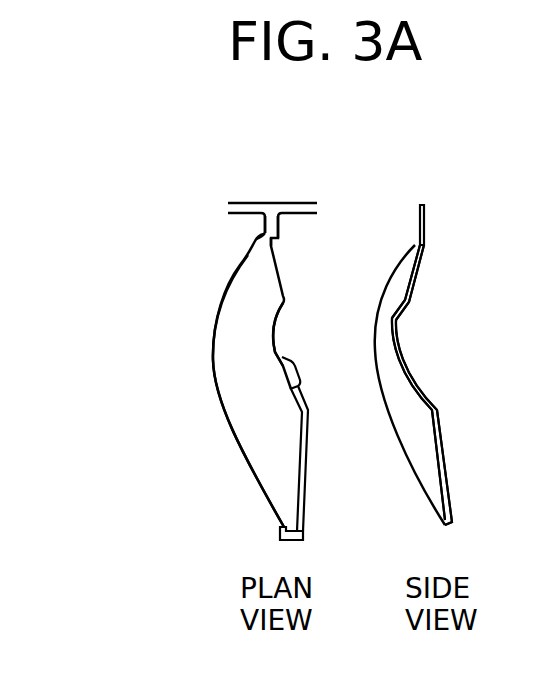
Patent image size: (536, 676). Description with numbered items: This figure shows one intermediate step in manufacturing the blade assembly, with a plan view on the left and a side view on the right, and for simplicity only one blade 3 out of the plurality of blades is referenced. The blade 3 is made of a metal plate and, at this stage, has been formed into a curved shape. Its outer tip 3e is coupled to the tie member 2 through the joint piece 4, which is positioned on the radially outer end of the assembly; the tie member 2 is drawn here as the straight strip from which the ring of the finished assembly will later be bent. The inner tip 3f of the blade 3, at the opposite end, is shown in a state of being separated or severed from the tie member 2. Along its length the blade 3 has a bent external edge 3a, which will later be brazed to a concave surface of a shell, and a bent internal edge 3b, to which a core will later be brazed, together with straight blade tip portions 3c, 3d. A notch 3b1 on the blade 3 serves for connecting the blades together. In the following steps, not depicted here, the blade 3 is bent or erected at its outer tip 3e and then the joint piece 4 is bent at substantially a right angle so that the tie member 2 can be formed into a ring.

The tie member 2 is at (228, 212).
The blade 3 is at (243, 432).
The external edge 3a is at (213, 362).
The internal edge 3b is at (283, 333).
The notch 3b1 is at (301, 372).
The blade tip portion 3c is at (414, 282).
The blade tip portion 3d is at (445, 472).
The outer tip 3e is at (262, 234).
The inner tip 3f is at (281, 537).
The joint piece 4 is at (273, 225).